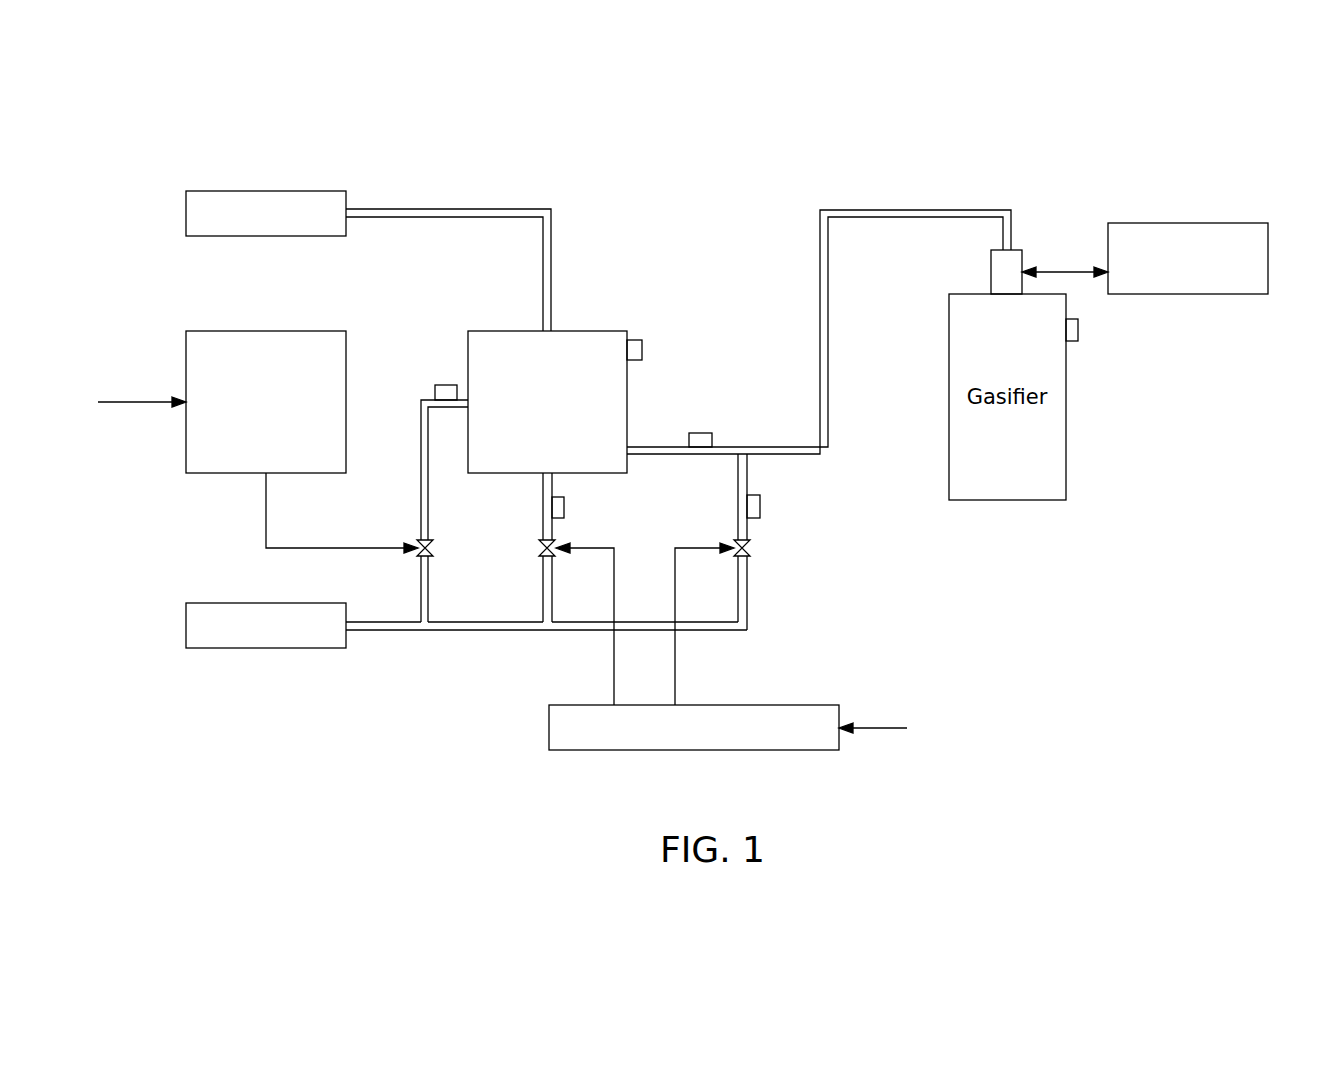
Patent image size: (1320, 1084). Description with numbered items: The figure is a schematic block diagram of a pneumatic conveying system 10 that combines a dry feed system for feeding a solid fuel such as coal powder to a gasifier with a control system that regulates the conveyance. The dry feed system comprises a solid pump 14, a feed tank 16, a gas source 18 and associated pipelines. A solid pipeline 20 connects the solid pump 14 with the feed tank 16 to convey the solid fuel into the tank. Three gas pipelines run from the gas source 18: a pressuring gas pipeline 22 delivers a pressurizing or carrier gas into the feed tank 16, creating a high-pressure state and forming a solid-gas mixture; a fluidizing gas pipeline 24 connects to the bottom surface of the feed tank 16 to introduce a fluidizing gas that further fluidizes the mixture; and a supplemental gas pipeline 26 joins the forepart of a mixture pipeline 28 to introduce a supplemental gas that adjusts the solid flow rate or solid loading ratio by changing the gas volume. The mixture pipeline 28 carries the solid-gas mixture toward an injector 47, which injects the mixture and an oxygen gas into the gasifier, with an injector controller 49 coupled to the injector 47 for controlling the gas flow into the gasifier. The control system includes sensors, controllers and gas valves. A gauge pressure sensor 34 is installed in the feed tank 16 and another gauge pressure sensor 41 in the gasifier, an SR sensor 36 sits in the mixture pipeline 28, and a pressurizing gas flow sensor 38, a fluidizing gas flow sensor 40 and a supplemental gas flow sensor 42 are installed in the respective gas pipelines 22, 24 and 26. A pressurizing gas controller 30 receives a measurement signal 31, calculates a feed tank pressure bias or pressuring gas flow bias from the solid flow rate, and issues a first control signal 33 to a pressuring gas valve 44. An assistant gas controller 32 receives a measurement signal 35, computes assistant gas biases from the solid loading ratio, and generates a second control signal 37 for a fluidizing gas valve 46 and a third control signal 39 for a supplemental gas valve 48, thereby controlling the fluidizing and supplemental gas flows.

The pneumatic conveying system 10 is at (1178, 812).
The solid pump 14 is at (257, 191).
The feed tank 16 is at (575, 331).
The gas source 18 is at (248, 603).
The solid pipeline 20 is at (462, 209).
The pressuring gas pipeline 22 is at (421, 505).
The fluidizing gas pipeline 24 is at (543, 527).
The supplemental gas pipeline 26 is at (747, 595).
The mixture pipeline 28 is at (820, 357).
The pressurizing gas controller 30 is at (262, 331).
The measurement signal 31 is at (122, 402).
The assistant gas controller 32 is at (765, 705).
The first control signal 33 is at (266, 522).
The gauge pressure sensor 34 is at (636, 340).
The measurement signal 35 is at (874, 728).
The SR sensor 36 is at (700, 433).
The second control signal 37 is at (600, 548).
The pressurizing gas flow sensor 38 is at (445, 385).
The third control signal 39 is at (683, 548).
The fluidizing gas flow sensor 40 is at (564, 508).
The gauge pressure sensor 41 is at (1079, 330).
The supplemental gas flow sensor 42 is at (761, 505).
The pressuring gas valve 44 is at (430, 544).
The fluidizing gas valve 46 is at (540, 556).
The injector 47 is at (991, 272).
The supplemental gas valve 48 is at (752, 553).
The injector controller 49 is at (1188, 223).